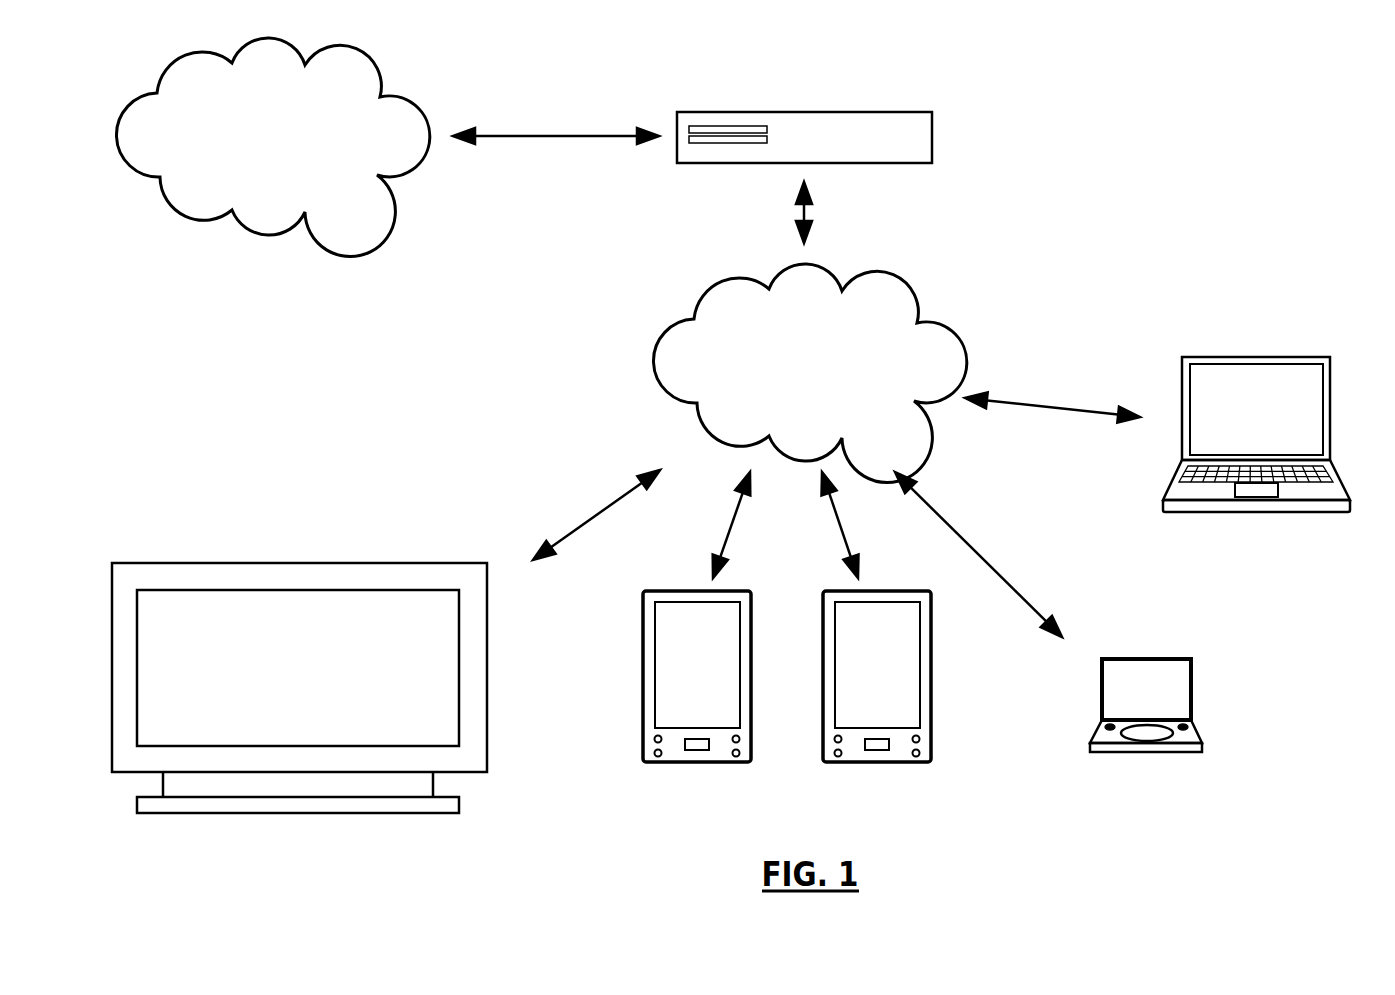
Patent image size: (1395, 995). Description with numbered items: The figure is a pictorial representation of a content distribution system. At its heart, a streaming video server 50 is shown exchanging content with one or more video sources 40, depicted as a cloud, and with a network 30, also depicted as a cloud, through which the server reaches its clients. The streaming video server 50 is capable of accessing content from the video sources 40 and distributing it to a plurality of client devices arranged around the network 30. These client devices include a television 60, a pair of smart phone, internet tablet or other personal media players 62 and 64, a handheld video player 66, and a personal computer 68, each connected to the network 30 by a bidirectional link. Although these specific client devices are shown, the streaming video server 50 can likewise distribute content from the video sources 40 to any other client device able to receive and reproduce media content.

The network 30 is at (809, 373).
The video source 40 is at (272, 147).
The streaming video server 50 is at (881, 140).
The television 60 is at (154, 625).
The personal media player 62 is at (663, 633).
The personal media player 64 is at (843, 633).
The handheld video player 66 is at (1112, 696).
The personal computer 68 is at (1209, 435).